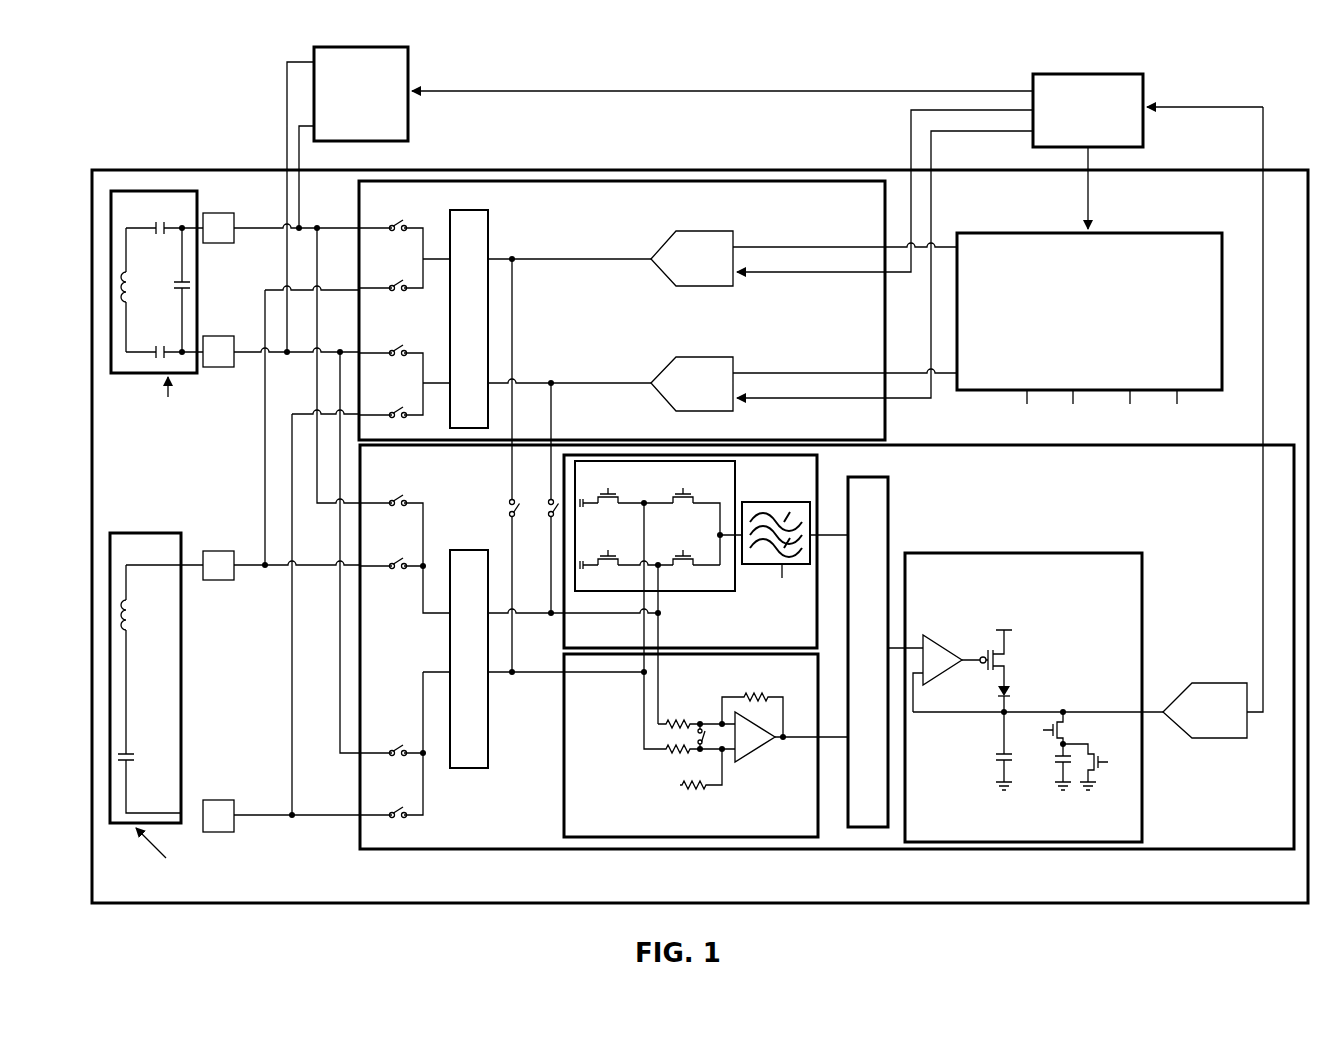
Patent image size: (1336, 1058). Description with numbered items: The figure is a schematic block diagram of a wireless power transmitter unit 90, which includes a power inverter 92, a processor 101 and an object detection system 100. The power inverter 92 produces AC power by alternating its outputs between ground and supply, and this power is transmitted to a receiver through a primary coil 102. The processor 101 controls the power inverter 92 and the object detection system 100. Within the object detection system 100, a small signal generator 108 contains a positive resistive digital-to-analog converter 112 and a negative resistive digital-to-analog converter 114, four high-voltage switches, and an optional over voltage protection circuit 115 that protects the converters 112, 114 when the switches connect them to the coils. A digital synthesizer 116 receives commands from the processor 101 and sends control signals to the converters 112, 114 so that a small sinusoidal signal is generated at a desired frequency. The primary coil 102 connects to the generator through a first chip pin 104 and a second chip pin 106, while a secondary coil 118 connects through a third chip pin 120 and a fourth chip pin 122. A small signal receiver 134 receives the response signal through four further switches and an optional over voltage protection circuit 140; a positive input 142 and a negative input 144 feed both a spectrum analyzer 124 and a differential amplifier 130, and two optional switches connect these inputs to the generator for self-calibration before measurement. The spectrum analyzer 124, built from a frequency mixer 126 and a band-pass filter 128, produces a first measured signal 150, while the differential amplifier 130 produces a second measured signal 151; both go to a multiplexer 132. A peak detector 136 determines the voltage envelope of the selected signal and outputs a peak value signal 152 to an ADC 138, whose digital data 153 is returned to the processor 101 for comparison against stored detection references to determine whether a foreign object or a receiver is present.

The wireless power transmitter unit 90 is at (792, 74).
The power inverter 92 is at (347, 199).
The object detection system 100 is at (700, 536).
The processor 101 is at (1000, 236).
The primary coil 102 is at (160, 302).
The chip pin 104 is at (240, 224).
The chip pin 106 is at (240, 334).
The small signal generator 108 is at (658, 310).
The positive resistive digital-to-analog converter 112 is at (670, 270).
The negative resistive digital-to-analog converter 114 is at (670, 394).
The over voltage protection circuit 115 is at (490, 226).
The digital synthesizer 116 is at (1089, 327).
The secondary coil 118 is at (169, 713).
The chip pin 120 is at (240, 551).
The chip pin 122 is at (240, 800).
The spectrum analyzer 124 is at (706, 589).
The frequency mixer 126 is at (658, 526).
The band-pass filter 128 is at (786, 508).
The differential amplifier 130 is at (706, 745).
The multiplexer 132 is at (885, 652).
The small signal receiver 134 is at (826, 478).
The peak detector 136 is at (1034, 697).
The analog to digital converter 138 is at (1213, 437).
The over voltage protection circuit 140 is at (480, 774).
The positive input 142 is at (510, 678).
The negative input 144 is at (546, 617).
The first measured signal 150 is at (828, 541).
The second measured signal 151 is at (826, 742).
The peak value signal 152 is at (1158, 704).
The digital data 153 is at (1257, 531).